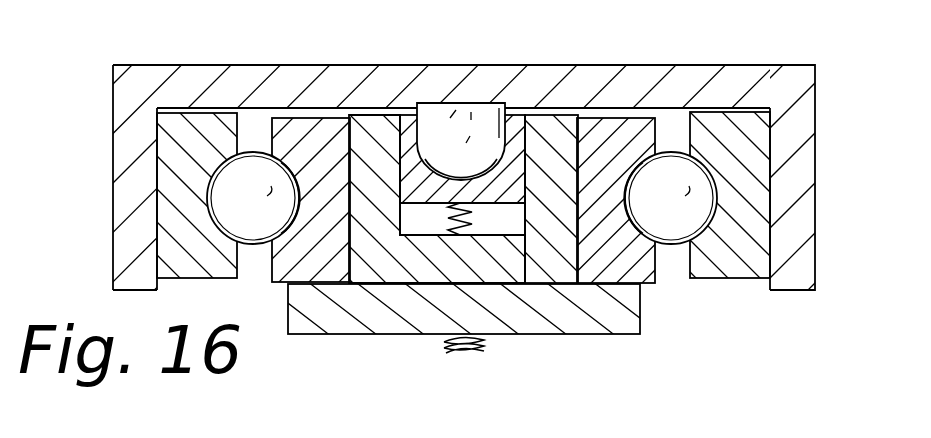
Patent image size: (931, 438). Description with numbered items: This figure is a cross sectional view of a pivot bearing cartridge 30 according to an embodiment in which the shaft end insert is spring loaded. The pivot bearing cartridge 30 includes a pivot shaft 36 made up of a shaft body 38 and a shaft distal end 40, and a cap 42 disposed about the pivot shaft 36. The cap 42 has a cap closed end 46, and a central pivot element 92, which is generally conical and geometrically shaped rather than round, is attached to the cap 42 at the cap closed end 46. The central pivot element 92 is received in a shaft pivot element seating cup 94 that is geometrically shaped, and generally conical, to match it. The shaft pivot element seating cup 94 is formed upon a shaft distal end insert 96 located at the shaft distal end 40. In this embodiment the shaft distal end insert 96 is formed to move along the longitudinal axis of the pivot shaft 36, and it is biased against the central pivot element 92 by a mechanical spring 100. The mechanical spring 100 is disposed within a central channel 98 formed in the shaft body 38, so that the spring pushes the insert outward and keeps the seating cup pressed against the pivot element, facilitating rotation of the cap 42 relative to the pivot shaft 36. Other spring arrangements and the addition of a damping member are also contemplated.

The pivot bearing cartridge 30 is at (98, 90).
The pivot shaft 36 is at (457, 308).
The shaft body 38 is at (473, 262).
The shaft distal end 40 is at (553, 143).
The cap 42 is at (690, 76).
The cap closed end 46 is at (555, 76).
The central pivot element 92 is at (452, 122).
The shaft pivot element seating cup 94 is at (417, 153).
The shaft distal end insert 96 is at (432, 187).
The central channel 98 is at (515, 218).
The mechanical spring 100 is at (445, 225).